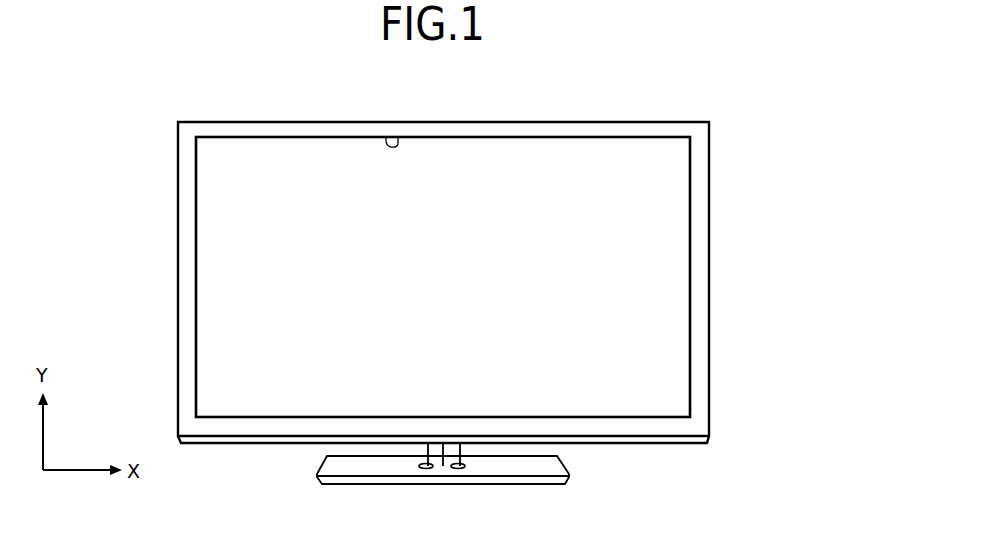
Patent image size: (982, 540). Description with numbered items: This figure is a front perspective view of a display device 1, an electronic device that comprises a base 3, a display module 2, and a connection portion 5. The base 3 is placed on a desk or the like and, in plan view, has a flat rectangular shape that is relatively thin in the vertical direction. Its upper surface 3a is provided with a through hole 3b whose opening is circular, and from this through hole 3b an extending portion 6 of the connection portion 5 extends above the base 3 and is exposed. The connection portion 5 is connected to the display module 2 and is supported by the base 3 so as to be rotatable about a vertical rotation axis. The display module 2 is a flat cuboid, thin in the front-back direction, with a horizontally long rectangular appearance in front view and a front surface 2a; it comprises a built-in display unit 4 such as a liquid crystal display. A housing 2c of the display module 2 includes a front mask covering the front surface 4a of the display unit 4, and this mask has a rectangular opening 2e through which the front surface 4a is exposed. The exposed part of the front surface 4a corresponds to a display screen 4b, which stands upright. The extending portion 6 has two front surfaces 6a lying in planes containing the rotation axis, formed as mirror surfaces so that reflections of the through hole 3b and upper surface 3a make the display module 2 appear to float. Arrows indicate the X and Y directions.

The display device 1 is at (745, 108).
The display module 2 is at (510, 256).
The front surface 2a is at (772, 279).
The housing 2c is at (282, 121).
The opening 2e is at (398, 138).
The base 3 is at (429, 489).
The upper surface 3a is at (345, 465).
The through hole 3b is at (458, 468).
The display unit 4 is at (403, 243).
The display screen 4b is at (443, 243).
The front surface 4a is at (482, 167).
The connection portion 5 is at (444, 483).
The extending portion 6 is at (444, 495).
The front surfaces 6a is at (427, 458).